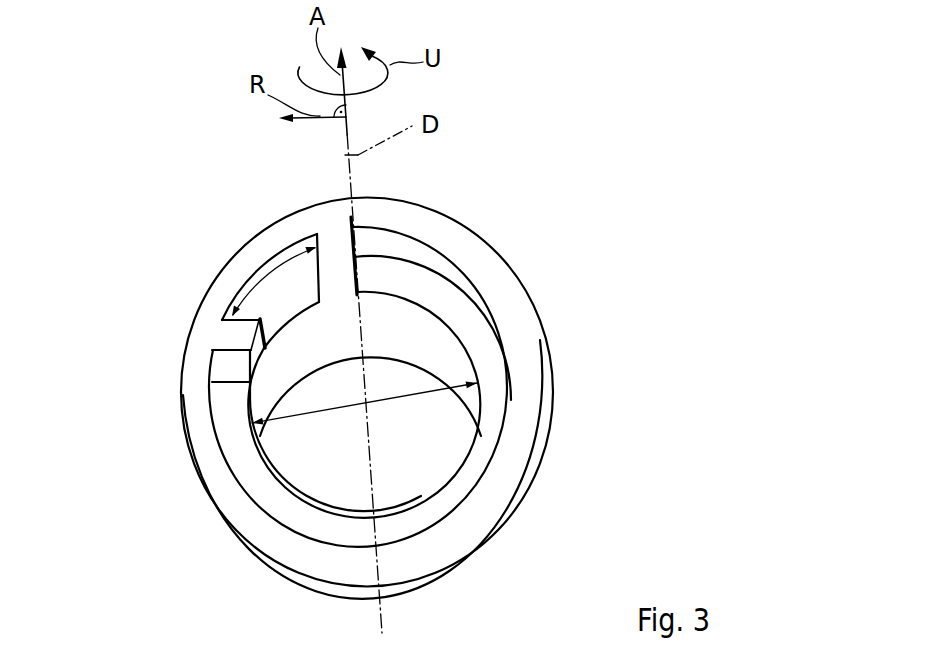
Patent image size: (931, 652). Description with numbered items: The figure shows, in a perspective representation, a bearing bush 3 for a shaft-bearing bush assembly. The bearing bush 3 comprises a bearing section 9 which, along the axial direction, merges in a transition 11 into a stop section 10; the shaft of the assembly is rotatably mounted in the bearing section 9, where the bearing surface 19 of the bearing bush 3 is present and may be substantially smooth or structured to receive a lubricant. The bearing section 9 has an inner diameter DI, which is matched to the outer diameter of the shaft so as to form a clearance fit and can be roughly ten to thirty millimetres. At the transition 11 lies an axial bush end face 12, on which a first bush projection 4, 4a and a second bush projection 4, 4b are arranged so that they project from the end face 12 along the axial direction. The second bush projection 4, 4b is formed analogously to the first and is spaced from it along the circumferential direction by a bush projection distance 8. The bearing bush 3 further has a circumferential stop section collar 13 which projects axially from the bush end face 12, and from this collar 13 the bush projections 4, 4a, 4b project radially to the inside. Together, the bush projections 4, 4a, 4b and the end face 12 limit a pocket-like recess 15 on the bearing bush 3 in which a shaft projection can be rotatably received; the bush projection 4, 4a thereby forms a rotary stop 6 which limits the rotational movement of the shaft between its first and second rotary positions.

The bearing bush 3 is at (616, 238).
The bush projection 4 is at (209, 270).
The first bush projection 4a is at (338, 245).
The second bush projection 4b is at (234, 334).
The rotary stop 6 is at (209, 270).
The bush projection distance 8 is at (268, 277).
The bearing section 9 is at (329, 345).
The stop section 10 is at (425, 398).
The transition 11 is at (478, 320).
The axial bush end face 12 is at (490, 348).
The stop section collar 13 is at (527, 382).
The pocket-like recess 15 is at (468, 276).
The bearing surface 19 is at (418, 338).
The inner diameter DI is at (404, 398).